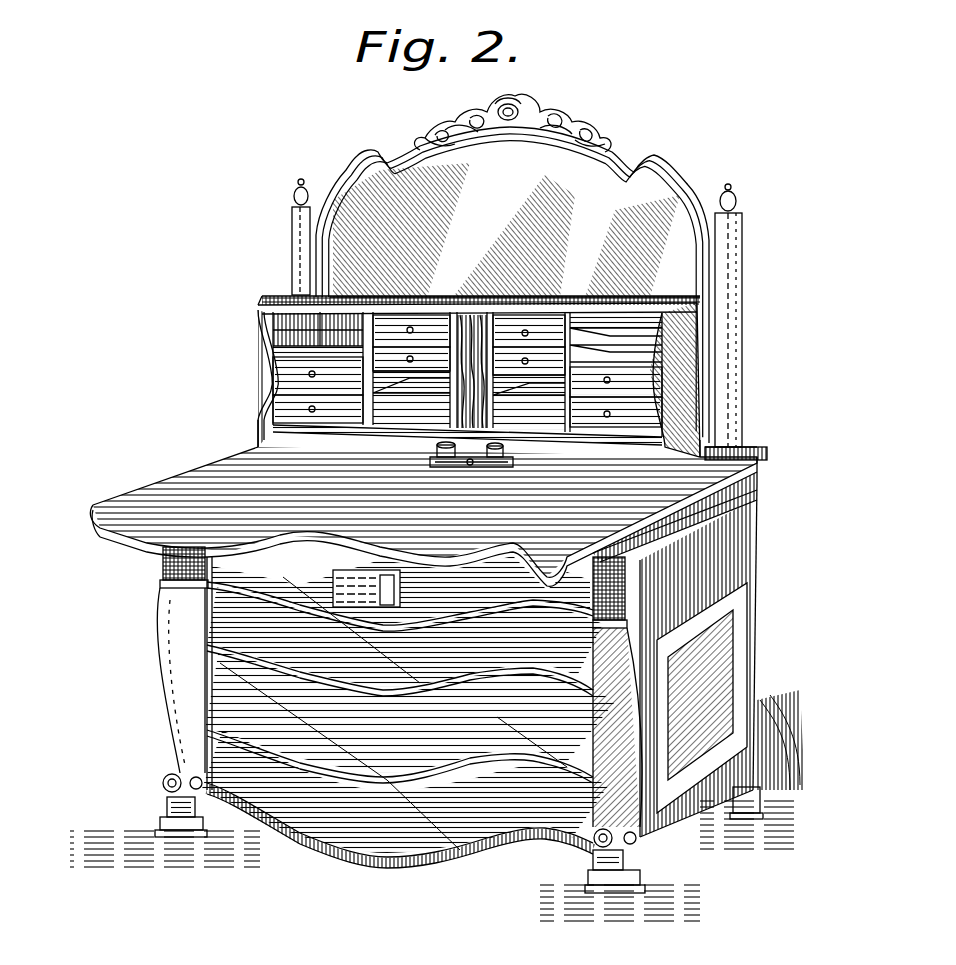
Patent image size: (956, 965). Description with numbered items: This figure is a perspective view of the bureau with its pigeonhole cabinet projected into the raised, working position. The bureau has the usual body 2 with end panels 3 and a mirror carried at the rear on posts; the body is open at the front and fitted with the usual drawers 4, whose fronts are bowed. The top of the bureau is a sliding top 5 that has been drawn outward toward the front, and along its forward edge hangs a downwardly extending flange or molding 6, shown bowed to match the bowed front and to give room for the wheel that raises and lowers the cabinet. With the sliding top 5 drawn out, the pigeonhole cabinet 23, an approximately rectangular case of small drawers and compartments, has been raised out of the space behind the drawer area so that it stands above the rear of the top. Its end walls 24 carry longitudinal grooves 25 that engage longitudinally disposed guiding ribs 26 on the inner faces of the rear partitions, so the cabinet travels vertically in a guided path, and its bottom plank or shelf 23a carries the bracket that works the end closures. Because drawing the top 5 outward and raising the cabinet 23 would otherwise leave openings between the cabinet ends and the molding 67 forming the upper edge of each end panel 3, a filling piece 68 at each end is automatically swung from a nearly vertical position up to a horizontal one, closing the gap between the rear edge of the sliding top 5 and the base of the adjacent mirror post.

The body 2 is at (440, 763).
The end panels 3 is at (707, 663).
The drawers 4 is at (400, 702).
The sliding top 5 is at (427, 531).
The molding 6 is at (347, 567).
The pigeonhole cabinet 23 is at (512, 268).
The bottom shelf 23a is at (545, 470).
The end walls 24 is at (680, 323).
The longitudinal grooves 25 is at (672, 397).
The guiding ribs 26 is at (716, 436).
The molding 67 is at (730, 497).
The filling piece 68 is at (249, 447).